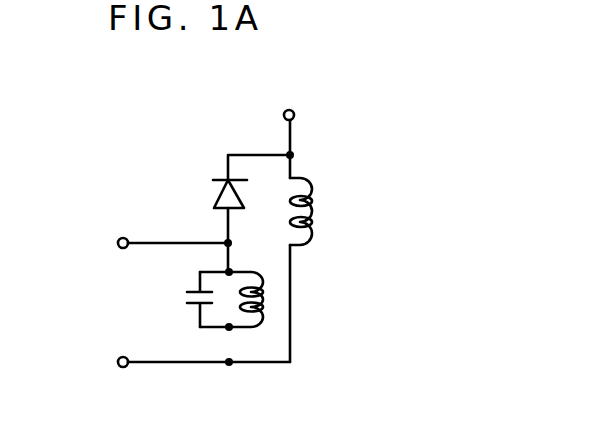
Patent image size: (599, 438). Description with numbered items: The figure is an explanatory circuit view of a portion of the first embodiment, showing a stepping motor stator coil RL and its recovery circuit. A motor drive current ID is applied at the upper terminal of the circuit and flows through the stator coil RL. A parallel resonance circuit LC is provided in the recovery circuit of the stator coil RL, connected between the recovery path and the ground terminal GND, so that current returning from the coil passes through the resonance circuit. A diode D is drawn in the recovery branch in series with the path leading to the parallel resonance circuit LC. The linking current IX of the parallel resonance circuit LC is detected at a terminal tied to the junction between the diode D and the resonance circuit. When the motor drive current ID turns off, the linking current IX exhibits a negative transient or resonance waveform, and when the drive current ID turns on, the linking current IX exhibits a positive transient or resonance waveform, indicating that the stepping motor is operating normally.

The motor drive current ID is at (285, 112).
The stator coil RL is at (308, 179).
The diode D is at (213, 201).
The linking current IX is at (137, 243).
The parallel resonance circuit LC is at (227, 285).
The ground terminal GND is at (166, 363).